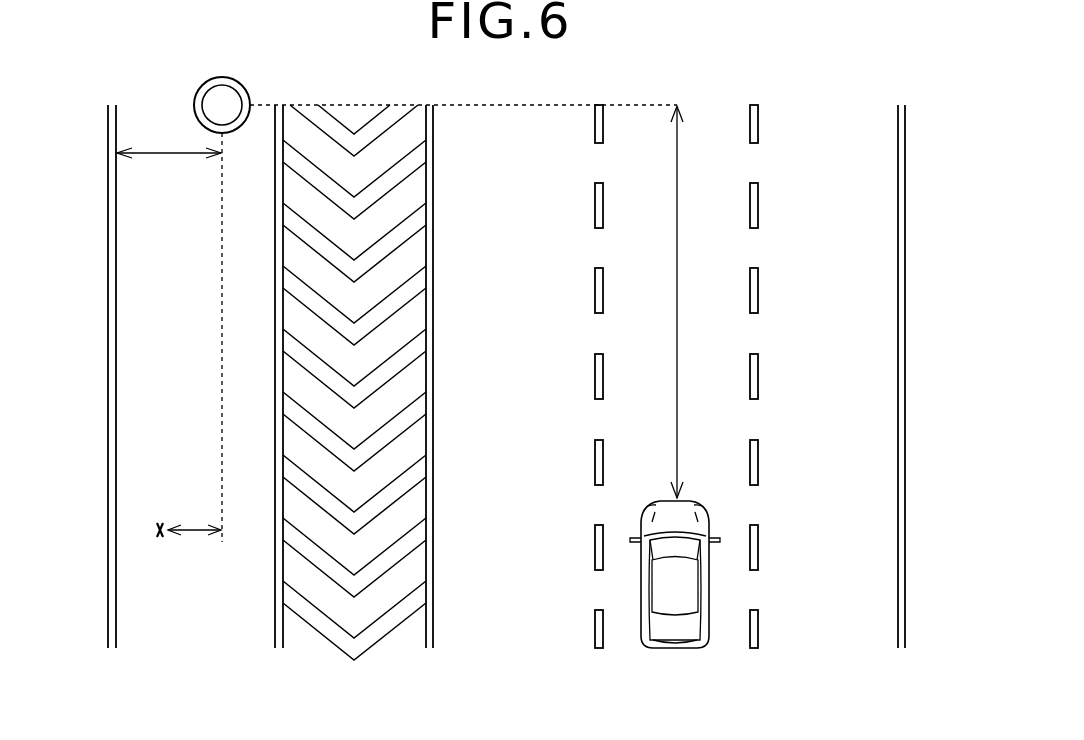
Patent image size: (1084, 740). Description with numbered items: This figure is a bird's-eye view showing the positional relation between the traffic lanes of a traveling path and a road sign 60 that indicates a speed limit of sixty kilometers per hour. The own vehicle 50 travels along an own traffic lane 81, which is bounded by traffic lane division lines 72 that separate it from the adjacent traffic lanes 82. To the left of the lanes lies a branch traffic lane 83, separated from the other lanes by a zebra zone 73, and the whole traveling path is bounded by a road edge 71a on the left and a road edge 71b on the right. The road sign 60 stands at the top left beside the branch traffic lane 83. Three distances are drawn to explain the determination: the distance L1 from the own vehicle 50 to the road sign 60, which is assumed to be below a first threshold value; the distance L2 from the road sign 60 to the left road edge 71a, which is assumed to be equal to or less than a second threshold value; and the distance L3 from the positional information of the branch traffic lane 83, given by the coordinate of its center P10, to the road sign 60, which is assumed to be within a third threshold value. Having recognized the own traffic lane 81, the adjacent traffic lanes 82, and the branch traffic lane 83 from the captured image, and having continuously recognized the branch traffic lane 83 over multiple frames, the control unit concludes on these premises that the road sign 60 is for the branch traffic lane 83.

The own vehicle 50 is at (712, 590).
The road sign 60 is at (195, 98).
The road edge 71a is at (108, 427).
The road edge 71b is at (904, 429).
The traffic lane division lines 72 is at (433, 630).
The zebra zone 73 is at (327, 626).
The own traffic lane 81 is at (733, 632).
The adjacent traffic lane 82 is at (527, 632).
The branch traffic lane 83 is at (170, 630).
The distance L1 is at (678, 338).
The distance L2 is at (154, 155).
The distance L3 is at (197, 535).
The center P10 is at (148, 529).